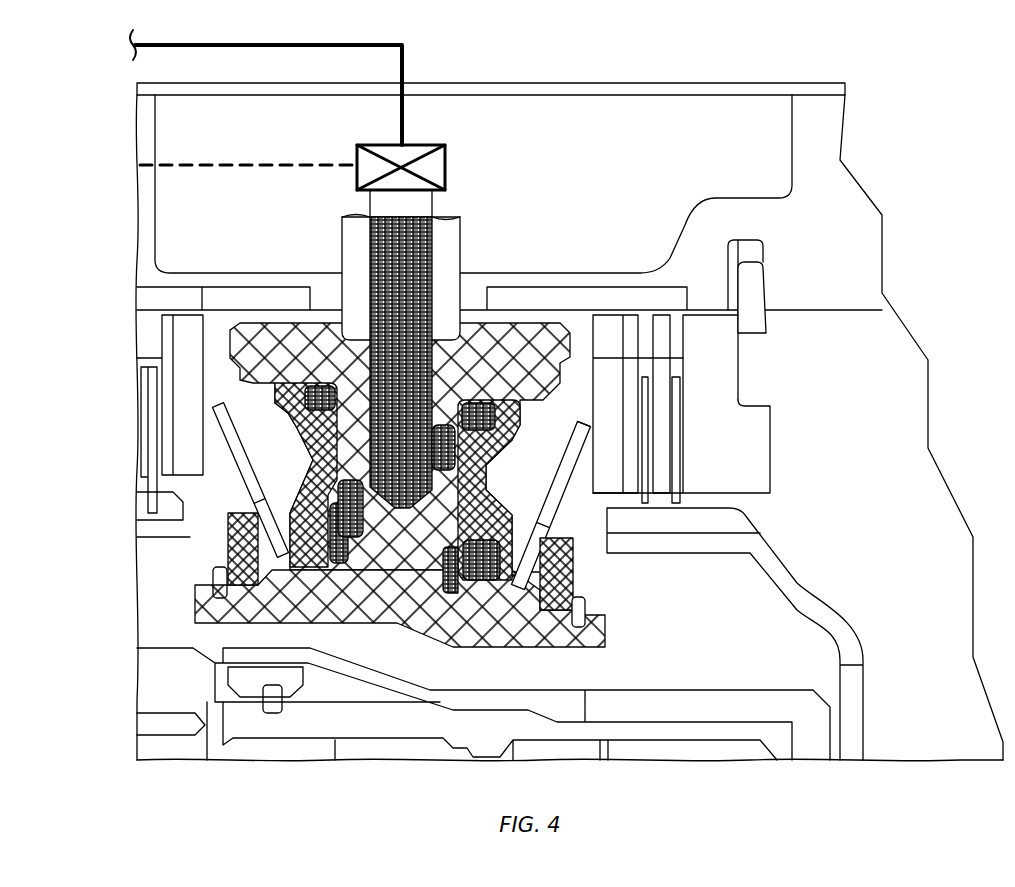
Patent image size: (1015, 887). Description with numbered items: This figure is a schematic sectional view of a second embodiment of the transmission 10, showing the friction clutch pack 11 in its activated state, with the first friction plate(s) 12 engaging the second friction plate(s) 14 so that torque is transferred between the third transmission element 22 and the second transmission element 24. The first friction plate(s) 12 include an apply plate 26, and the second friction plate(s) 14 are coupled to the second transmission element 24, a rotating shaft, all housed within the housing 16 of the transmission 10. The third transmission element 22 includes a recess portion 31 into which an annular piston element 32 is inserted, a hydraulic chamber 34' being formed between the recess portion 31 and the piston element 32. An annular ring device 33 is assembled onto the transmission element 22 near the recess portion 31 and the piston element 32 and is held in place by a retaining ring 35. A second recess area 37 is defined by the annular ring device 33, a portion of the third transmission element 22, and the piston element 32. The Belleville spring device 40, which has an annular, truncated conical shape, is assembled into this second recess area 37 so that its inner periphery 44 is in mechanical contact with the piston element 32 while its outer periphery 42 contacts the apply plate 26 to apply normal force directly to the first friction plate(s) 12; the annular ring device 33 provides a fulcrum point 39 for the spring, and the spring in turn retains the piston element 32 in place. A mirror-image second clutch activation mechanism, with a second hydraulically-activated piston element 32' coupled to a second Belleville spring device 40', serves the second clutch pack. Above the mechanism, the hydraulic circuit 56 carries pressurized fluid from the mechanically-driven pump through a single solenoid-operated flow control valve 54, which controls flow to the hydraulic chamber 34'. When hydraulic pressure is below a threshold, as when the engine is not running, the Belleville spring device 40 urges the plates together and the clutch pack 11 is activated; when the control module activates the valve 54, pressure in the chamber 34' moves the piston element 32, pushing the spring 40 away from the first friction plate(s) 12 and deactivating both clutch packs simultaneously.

The transmission 10 is at (868, 418).
The friction clutch pack 11 is at (772, 473).
The first friction plate(s) 12 is at (632, 383).
The second friction plate(s) 14 is at (645, 393).
The housing 16 is at (845, 280).
The third transmission element 22 is at (533, 635).
The second transmission element 24 is at (792, 592).
The apply plate 26 is at (607, 390).
The recess portion 31 is at (493, 400).
The piston element 32 is at (515, 488).
The second hydraulically-activated piston element 32' is at (293, 475).
The annular ring device 33 is at (543, 587).
The hydraulic chamber 34' is at (427, 508).
The retaining ring 35 is at (590, 607).
The second recess area 37 is at (530, 585).
The fulcrum point 39 is at (575, 572).
The Belleville spring device 40 is at (588, 505).
The second Belleville spring device 40' is at (237, 500).
The outer periphery 42 is at (577, 430).
The inner periphery 44 is at (500, 548).
The solenoid-operated flow control valve 54 is at (447, 165).
The hydraulic circuit 56 is at (405, 67).